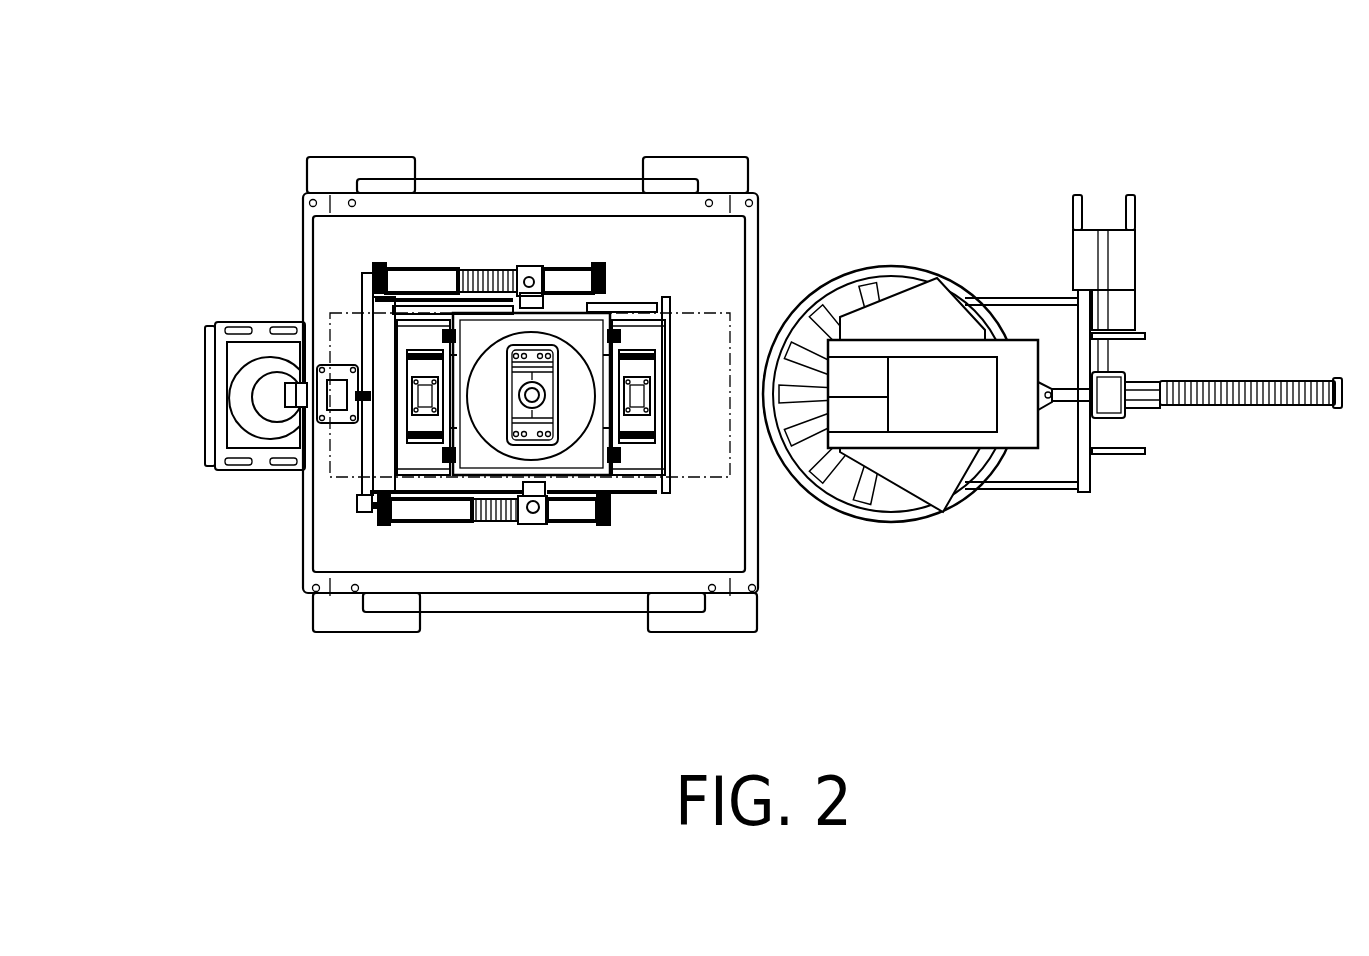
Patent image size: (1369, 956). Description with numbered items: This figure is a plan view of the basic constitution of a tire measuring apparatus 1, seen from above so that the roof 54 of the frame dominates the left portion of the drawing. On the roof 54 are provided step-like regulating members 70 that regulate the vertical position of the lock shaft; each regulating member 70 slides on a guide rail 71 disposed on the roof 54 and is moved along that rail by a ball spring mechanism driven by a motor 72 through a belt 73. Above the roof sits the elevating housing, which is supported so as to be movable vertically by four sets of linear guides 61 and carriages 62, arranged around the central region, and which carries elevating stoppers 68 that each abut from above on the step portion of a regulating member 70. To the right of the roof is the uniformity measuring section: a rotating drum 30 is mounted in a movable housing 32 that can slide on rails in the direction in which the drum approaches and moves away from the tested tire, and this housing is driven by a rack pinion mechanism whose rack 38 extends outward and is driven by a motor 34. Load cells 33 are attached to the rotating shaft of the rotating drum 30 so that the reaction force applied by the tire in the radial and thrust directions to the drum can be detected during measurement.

The measuring apparatus 1 is at (972, 121).
The rotating drum 30 is at (835, 262).
The movable housing 32 is at (1003, 448).
The load cells 33 is at (873, 372).
The motor 34 is at (1137, 263).
The rack 38 is at (1263, 381).
The roof 54 is at (592, 232).
The linear guides 61 is at (410, 337).
The carriages 62 is at (409, 267).
The elevating stoppers 68 is at (539, 268).
The regulating members 70 is at (497, 266).
The guide rail 71 is at (404, 497).
The motor 72 is at (278, 392).
The belt 73 is at (366, 343).